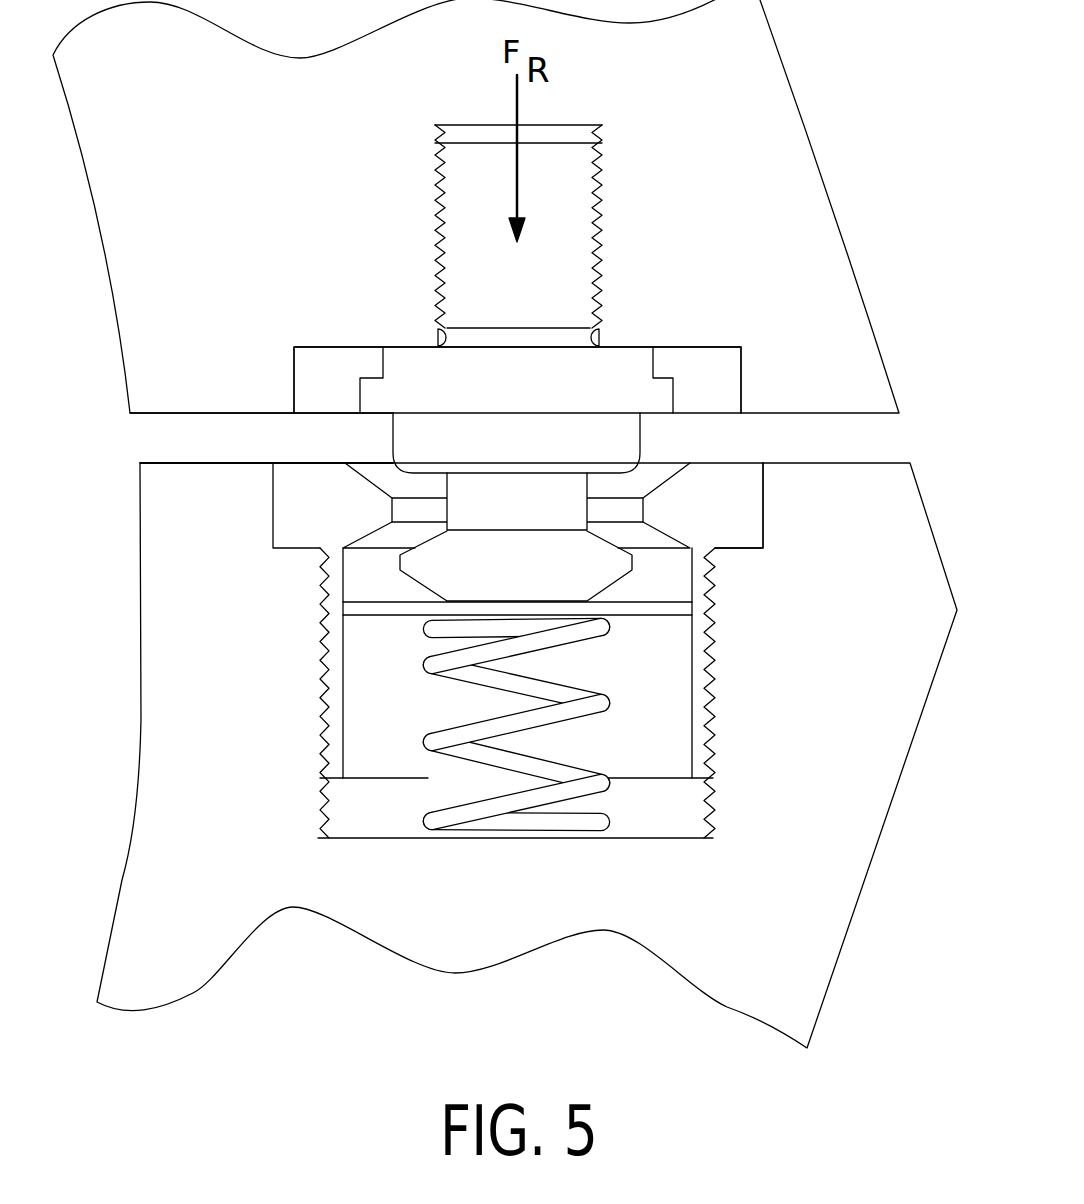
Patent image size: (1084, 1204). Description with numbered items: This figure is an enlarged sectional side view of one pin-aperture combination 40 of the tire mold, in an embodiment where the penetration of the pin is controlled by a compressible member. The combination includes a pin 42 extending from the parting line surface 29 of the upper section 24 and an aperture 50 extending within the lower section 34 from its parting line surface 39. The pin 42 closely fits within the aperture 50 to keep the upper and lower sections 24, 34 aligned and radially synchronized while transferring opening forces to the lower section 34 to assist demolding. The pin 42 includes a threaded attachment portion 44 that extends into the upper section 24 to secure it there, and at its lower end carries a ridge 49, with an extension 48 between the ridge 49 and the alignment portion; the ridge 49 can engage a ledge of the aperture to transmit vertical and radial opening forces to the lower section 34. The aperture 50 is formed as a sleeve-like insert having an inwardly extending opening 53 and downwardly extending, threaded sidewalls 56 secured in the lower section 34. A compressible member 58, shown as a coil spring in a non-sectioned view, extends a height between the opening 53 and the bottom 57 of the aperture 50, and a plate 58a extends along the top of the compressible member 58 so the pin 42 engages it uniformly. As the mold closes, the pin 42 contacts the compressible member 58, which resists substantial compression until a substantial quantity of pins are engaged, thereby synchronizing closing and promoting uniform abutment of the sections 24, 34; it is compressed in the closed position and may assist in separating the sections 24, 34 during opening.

The upper section 24 is at (156, 87).
The lower section 34 is at (175, 976).
The parting line surface 39 is at (175, 463).
The parting line surface 29 is at (227, 414).
The pin-aperture combination 40 is at (733, 250).
The pin 42 is at (468, 208).
The attachment portion 44 is at (576, 293).
The extension 48 is at (520, 521).
The ridge 49 is at (425, 588).
The aperture 50 is at (715, 702).
The opening 53 is at (643, 510).
The sidewalls 56 is at (333, 752).
The bottom 57 is at (653, 840).
The compressible member 58 is at (580, 763).
The plate 58a is at (650, 617).